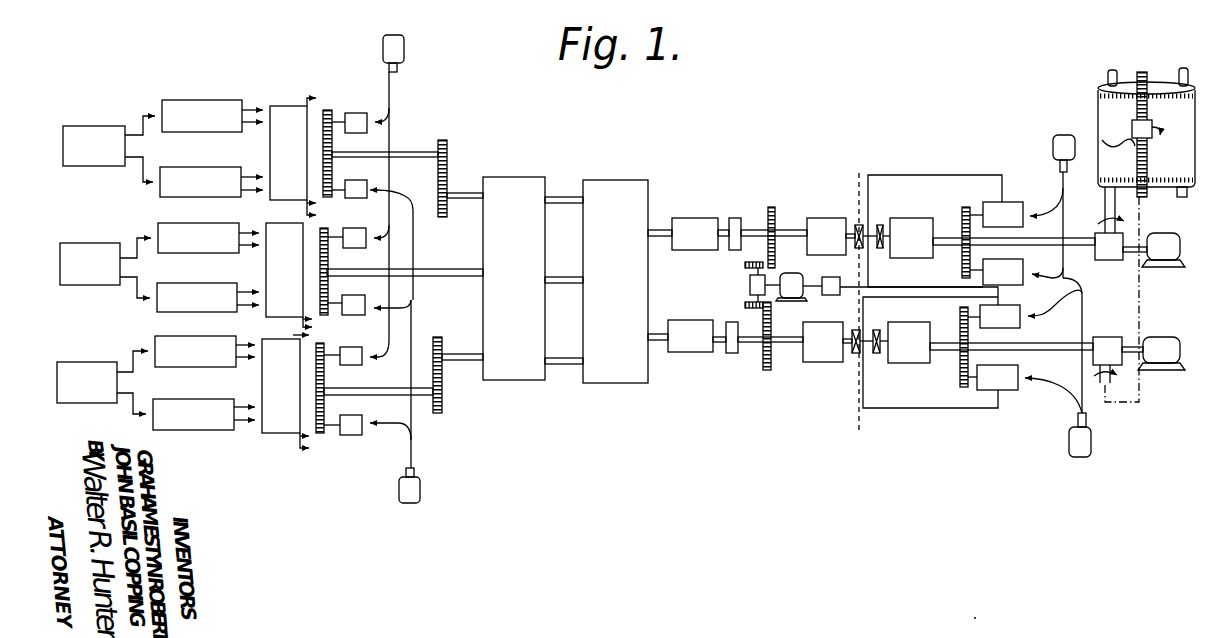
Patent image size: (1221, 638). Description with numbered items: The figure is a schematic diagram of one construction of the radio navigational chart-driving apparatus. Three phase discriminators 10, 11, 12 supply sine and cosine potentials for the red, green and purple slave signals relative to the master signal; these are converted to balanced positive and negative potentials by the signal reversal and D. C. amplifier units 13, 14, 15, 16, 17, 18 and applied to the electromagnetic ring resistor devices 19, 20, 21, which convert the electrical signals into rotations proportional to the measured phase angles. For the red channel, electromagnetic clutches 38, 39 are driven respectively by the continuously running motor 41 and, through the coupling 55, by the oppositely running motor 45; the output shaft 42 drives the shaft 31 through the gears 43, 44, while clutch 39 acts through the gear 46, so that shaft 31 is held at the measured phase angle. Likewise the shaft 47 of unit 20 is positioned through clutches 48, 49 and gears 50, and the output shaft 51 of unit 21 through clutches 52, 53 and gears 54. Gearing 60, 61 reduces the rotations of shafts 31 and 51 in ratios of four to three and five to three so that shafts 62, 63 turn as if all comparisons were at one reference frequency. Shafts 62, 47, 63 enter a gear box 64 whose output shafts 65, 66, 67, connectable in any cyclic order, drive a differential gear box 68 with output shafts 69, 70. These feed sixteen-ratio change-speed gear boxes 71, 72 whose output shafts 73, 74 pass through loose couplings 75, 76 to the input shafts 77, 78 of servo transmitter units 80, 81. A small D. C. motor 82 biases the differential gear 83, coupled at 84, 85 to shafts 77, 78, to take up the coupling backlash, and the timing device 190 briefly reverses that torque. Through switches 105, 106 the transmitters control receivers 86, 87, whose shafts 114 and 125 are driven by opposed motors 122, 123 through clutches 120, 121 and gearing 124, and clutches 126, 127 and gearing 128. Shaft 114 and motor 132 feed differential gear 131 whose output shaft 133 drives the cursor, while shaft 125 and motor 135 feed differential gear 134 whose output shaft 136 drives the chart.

The phase discriminator 10 is at (93, 126).
The phase discriminator 11 is at (100, 243).
The phase discriminator 12 is at (88, 362).
The signal reversal and D. C. amplifier unit 13 is at (172, 100).
The signal reversal and D. C. amplifier unit 14 is at (180, 167).
The signal reversal and D. C. amplifier unit 15 is at (178, 223).
The signal reversal and D. C. amplifier unit 16 is at (175, 283).
The signal reversal and D. C. amplifier unit 17 is at (165, 336).
The signal reversal and D. C. amplifier unit 18 is at (178, 399).
The electromagnetic device 19 is at (282, 110).
The ring resistor unit 20 is at (280, 228).
The electromagnetic device 21 is at (280, 343).
The shaft 31 is at (382, 151).
The electromagnetic clutch 38 is at (373, 120).
The electromagnetic clutch 39 is at (358, 176).
The electric motor 41 is at (404, 42).
The output shaft 42 is at (350, 113).
The gear 43 is at (328, 110).
The gear 44 is at (320, 153).
The electric motor 45 is at (420, 487).
The gear 46 is at (343, 198).
The shaft 47 is at (460, 269).
The electromagnetic clutch 48 is at (380, 240).
The electromagnetic clutch 49 is at (378, 312).
The gears 50 is at (333, 291).
The output shaft 51 is at (384, 388).
The electromagnetic clutch 52 is at (351, 347).
The electromagnetic clutch 53 is at (350, 435).
The gears 54 is at (318, 435).
The mechanical coupling 55 is at (413, 205).
The gearing 60 is at (447, 143).
The gearing 61 is at (440, 413).
The shaft 62 is at (463, 193).
The shaft 63 is at (456, 362).
The gear box 64 is at (512, 365).
The output shaft 65 is at (565, 197).
The output shaft 66 is at (565, 277).
The output shaft 67 is at (568, 358).
The gear box 68 is at (605, 370).
The output shaft 69 is at (662, 230).
The output shaft 70 is at (658, 340).
The change-speed gear box 71 is at (698, 222).
The change-speed gear box 72 is at (690, 352).
The output shaft 73 is at (735, 218).
The output shaft 74 is at (720, 342).
The loose coupling 75 is at (770, 207).
The loose coupling 76 is at (732, 353).
The input shaft 77 is at (780, 230).
The input shaft 78 is at (776, 345).
The servo transmitter unit 80 is at (825, 220).
The servo transmitter unit 81 is at (818, 345).
The D. C. electric motor 82 is at (793, 301).
The differential gear 83 is at (745, 266).
The coupling 84 is at (766, 250).
The coupling 85 is at (760, 312).
The receiver 86 is at (912, 225).
The receiver 87 is at (905, 330).
The switch 105 is at (859, 225).
The switch 106 is at (881, 224).
The shaft 114 is at (1048, 238).
The clutch 120 is at (1008, 202).
The clutch 121 is at (1040, 278).
The electric motor 122 is at (1064, 135).
The electric motor 123 is at (1085, 457).
The gearing 124 is at (966, 207).
The shaft 125 is at (1075, 343).
The clutch 126 is at (997, 392).
The clutch 127 is at (1008, 392).
The gearing 128 is at (960, 380).
The differential gear 131 is at (1110, 260).
The electric motor 132 is at (1160, 233).
The output shaft 133 is at (1112, 72).
The differential gear 134 is at (1108, 347).
The electric motor 135 is at (1160, 370).
The output shaft 136 is at (1141, 285).
The timing device 190 is at (870, 288).